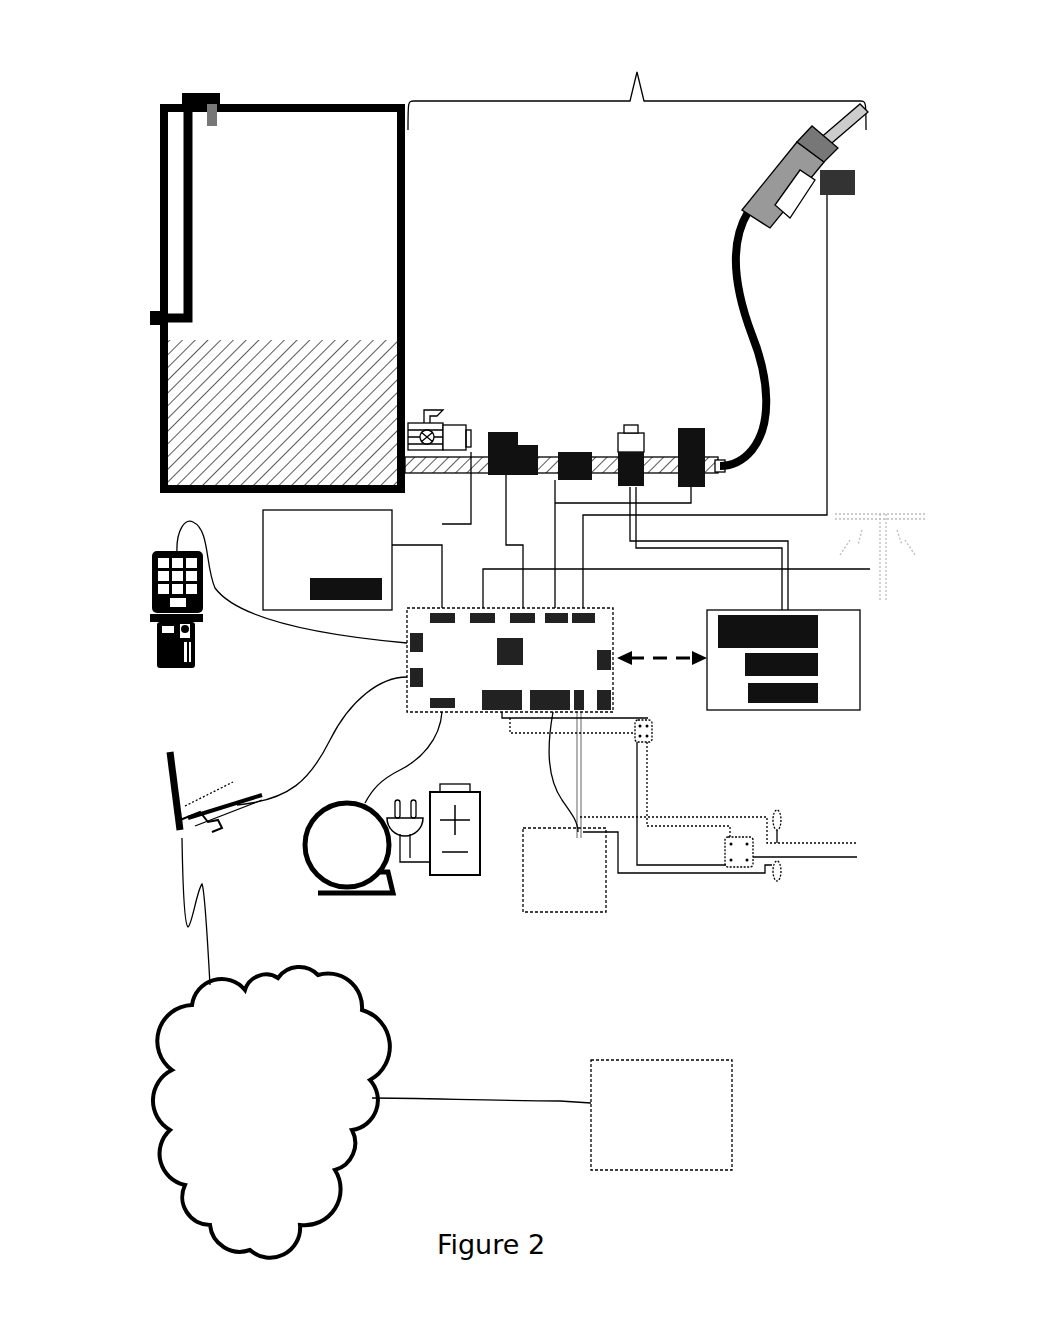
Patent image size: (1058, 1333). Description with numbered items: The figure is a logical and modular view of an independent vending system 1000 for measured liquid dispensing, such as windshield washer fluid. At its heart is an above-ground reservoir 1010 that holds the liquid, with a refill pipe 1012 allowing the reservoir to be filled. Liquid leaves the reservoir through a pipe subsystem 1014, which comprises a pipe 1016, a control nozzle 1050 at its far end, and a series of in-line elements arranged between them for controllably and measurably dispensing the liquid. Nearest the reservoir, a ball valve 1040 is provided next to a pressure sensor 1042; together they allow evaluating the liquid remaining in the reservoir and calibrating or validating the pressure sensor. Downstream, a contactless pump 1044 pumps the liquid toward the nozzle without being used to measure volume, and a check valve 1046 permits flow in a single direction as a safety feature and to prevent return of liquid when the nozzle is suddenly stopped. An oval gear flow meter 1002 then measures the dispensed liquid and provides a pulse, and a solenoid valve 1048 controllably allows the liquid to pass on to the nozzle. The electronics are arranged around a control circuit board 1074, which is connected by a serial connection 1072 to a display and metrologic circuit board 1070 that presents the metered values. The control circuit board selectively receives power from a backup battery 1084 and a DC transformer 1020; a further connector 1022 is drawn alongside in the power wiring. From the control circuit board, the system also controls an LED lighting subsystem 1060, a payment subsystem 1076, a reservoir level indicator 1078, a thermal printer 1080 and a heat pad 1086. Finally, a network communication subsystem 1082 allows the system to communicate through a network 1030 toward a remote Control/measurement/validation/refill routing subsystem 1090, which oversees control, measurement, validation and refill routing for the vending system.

The system 1000 is at (118, 78).
The oval gear flow meter 1002 is at (630, 425).
The above-ground reservoir 1010 is at (282, 298).
The refill pipe 1012 is at (212, 128).
The pipe subsystem 1014 is at (637, 92).
The pipe 1016 is at (405, 488).
The DC transformer 1020 is at (652, 742).
The connector 1022 is at (742, 867).
The network 1030 is at (372, 1112).
The ball valve 1040 is at (420, 422).
The pressure sensor 1042 is at (453, 425).
The contactless pump 1044 is at (513, 432).
The check valve 1046 is at (575, 452).
The solenoid valve 1048 is at (692, 428).
The control nozzle 1050 is at (848, 195).
The LED lighting subsystem 1060 is at (884, 555).
The display and metrologic circuit board 1070 is at (768, 710).
The serial connection 1072 is at (657, 668).
The control circuit board 1074 is at (462, 712).
The payment subsystem 1076 is at (181, 668).
The reservoir level indicator 1078 is at (327, 560).
The thermal printer 1080 is at (373, 802).
The network communication subsystem 1082 is at (216, 830).
The backup battery 1084 is at (453, 876).
The heat pad 1086 is at (558, 913).
The Control/measurement/validation/refill routing subsystem 1090 is at (718, 1170).